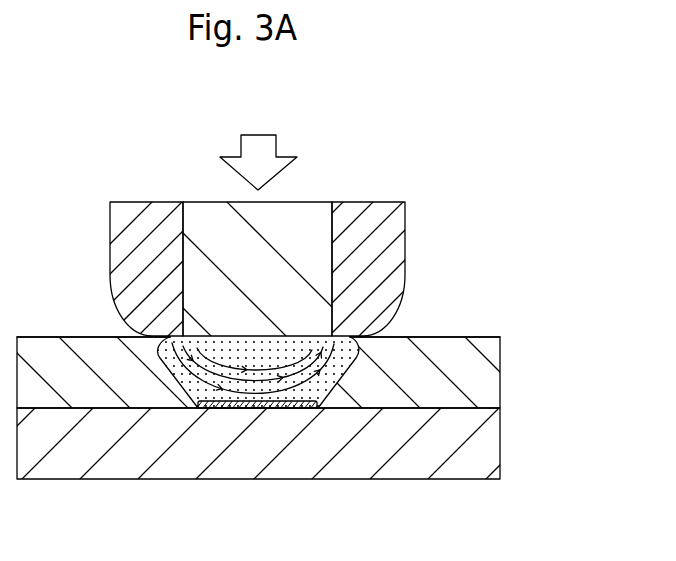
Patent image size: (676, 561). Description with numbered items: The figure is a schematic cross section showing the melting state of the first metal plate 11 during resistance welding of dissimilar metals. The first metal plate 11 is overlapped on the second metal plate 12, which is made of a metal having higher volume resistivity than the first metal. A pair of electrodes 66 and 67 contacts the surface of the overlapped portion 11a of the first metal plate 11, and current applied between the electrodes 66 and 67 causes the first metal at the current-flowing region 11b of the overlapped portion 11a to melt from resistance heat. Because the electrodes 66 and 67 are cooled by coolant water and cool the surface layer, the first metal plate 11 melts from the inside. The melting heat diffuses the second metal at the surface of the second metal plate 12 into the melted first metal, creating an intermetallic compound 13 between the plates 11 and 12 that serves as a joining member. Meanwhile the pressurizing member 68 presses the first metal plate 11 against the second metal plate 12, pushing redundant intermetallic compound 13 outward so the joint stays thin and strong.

The electrode 66 is at (132, 215).
The electrode 67 is at (382, 217).
The pressurizing member 68 is at (317, 217).
The first metal plate 11 is at (491, 362).
The overlapped portion 11a is at (452, 363).
The current-flowing region 11b is at (332, 373).
The second metal plate 12 is at (488, 448).
The intermetallic compound 13 is at (250, 402).